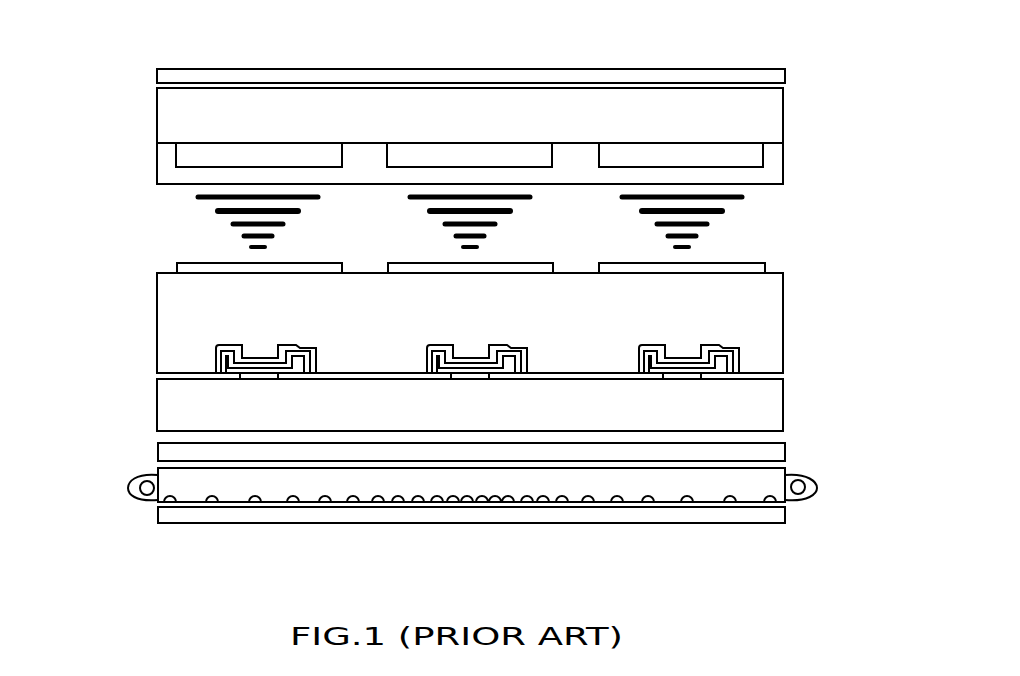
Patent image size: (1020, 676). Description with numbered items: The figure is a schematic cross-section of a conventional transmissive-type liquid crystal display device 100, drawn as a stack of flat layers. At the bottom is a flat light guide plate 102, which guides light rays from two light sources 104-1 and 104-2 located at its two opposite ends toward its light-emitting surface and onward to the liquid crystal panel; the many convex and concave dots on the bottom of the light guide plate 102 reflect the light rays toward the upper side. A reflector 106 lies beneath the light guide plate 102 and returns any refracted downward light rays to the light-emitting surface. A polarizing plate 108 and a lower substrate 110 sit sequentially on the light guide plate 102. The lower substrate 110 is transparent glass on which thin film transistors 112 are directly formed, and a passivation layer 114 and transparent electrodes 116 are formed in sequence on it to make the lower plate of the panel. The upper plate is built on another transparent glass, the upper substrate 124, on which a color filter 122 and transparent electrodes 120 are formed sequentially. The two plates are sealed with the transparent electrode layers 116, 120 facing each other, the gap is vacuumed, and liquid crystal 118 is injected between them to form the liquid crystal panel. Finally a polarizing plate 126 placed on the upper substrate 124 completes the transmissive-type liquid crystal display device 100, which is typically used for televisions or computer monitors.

The transmissive-type liquid crystal display device 100 is at (137, 105).
The light guide plate 102 is at (740, 480).
The light source 104-1 is at (812, 475).
The light source 104-2 is at (145, 480).
The reflector 106 is at (687, 513).
The polarizing plate 108 is at (758, 449).
The lower substrate 110 is at (755, 396).
The thin film transistors 112 is at (738, 352).
The passivation layer 114 is at (754, 305).
The transparent electrodes 116 is at (737, 266).
The liquid crystal 118 is at (213, 222).
The transparent electrodes 120 is at (775, 164).
The color filter 122 is at (708, 152).
The upper substrate 124 is at (760, 120).
The polarizing plate 126 is at (768, 76).